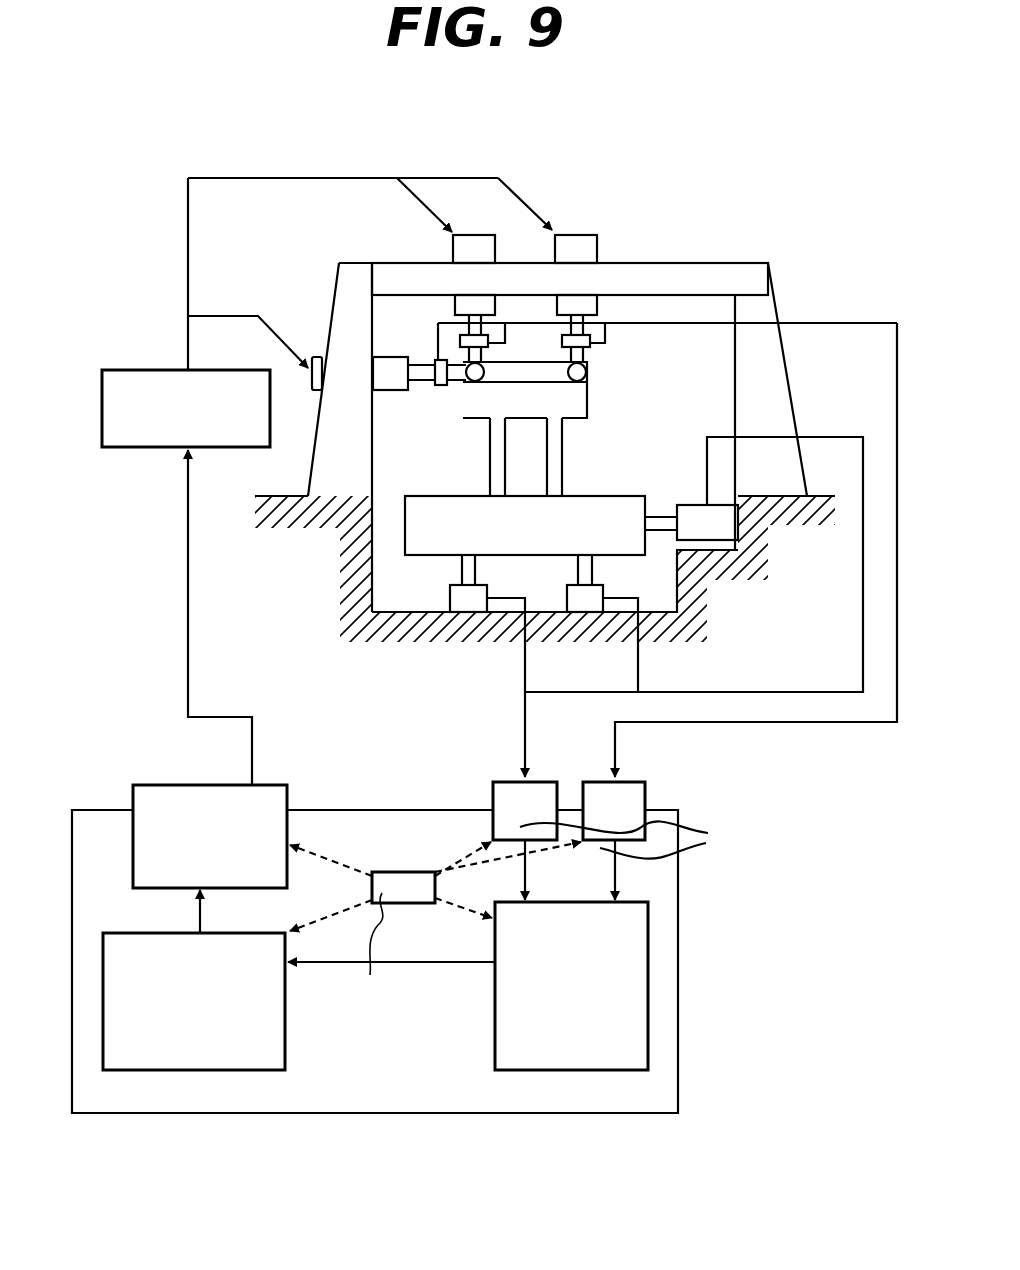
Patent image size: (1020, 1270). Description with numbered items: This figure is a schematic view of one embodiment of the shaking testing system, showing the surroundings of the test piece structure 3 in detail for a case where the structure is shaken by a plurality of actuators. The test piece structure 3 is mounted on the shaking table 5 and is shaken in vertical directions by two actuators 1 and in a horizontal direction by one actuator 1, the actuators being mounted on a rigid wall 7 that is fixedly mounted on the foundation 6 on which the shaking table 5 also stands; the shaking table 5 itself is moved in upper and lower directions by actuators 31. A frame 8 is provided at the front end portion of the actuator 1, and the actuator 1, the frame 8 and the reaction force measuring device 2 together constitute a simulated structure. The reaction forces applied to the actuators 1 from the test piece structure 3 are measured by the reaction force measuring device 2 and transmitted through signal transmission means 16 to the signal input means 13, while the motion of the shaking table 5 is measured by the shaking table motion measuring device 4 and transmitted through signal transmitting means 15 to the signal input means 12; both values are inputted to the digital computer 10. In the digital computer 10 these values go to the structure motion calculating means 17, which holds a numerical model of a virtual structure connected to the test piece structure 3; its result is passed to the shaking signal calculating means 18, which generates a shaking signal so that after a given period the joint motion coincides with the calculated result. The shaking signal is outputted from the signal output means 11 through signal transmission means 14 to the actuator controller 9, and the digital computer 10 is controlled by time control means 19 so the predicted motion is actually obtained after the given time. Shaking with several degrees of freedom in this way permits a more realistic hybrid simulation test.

The actuator 1 is at (472, 235).
The reaction force measuring device 2 is at (440, 388).
The test piece structure 3 is at (590, 396).
The shaking table motion measuring device 4 is at (690, 505).
The shaking table 5 is at (590, 495).
The foundation 6 is at (348, 590).
The rigid wall 7 is at (330, 314).
The frame 8 is at (527, 360).
The actuator controller 9 is at (130, 368).
The digital computer 10 is at (681, 992).
The signal output means 11 is at (288, 791).
The signal input means 12 is at (493, 790).
The signal input means 13 is at (647, 786).
The signal transmission means 14 is at (188, 700).
The signal transmitting means 15 is at (525, 718).
The signal transmission means 16 is at (803, 724).
The structure motion calculating means 17 is at (649, 923).
The shaking signal calculating means 18 is at (125, 930).
The time control means 19 is at (408, 905).
The actuator 31 is at (345, 262).